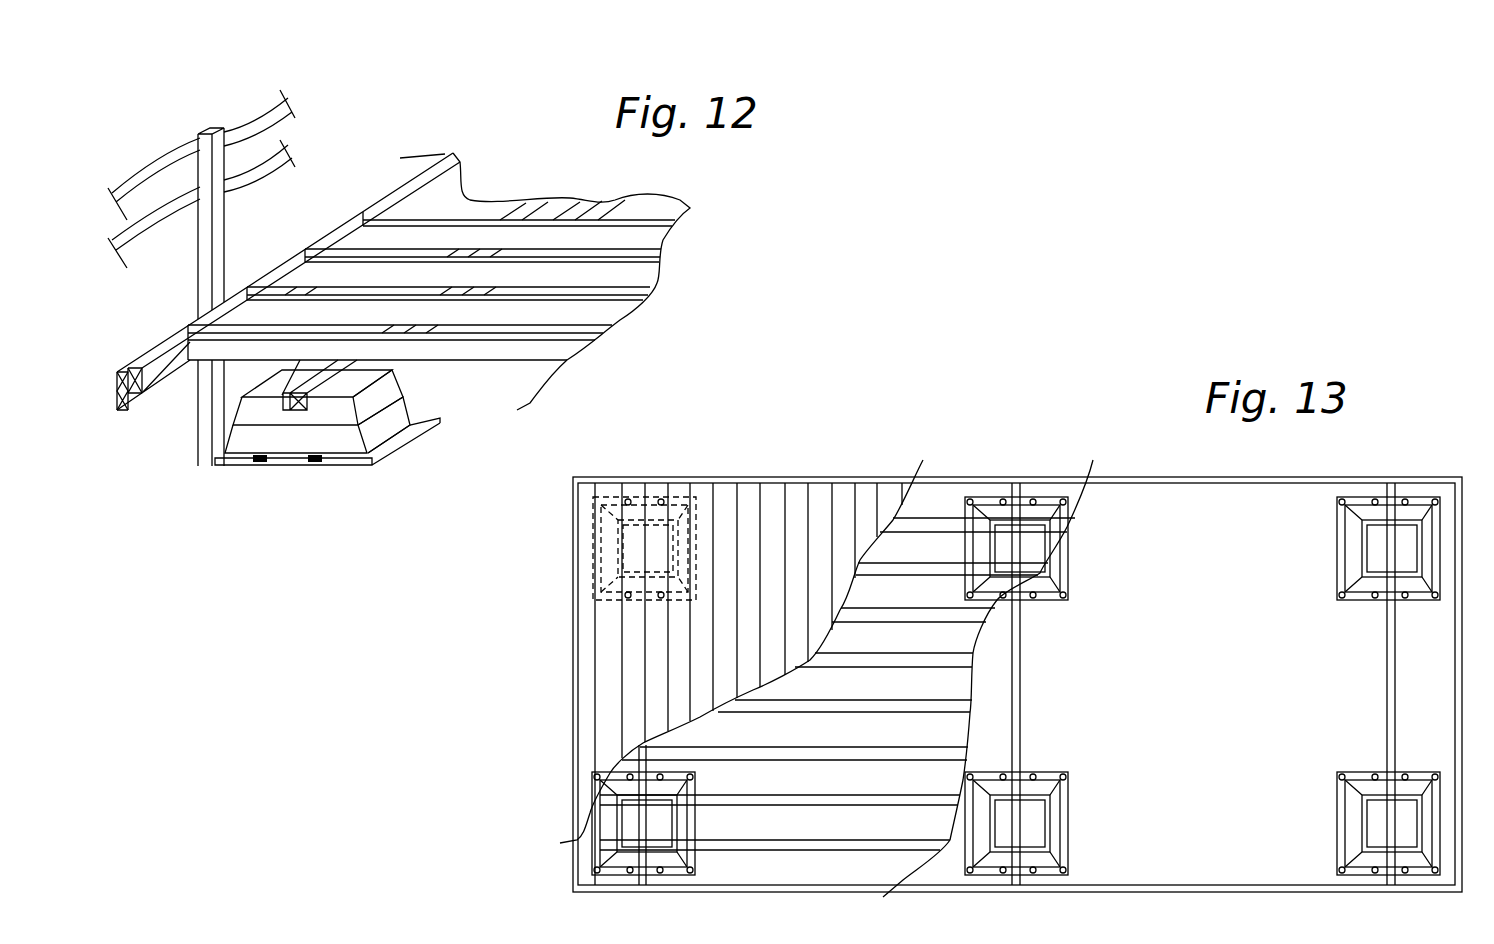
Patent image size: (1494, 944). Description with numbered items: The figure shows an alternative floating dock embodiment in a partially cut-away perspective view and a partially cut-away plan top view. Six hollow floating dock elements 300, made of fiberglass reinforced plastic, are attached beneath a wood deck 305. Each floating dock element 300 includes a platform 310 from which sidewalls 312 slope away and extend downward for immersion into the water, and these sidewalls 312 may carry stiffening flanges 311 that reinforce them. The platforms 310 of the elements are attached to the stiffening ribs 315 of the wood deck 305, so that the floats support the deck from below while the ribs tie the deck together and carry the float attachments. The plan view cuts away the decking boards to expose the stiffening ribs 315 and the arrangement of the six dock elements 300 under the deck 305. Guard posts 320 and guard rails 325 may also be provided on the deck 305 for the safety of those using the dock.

In FIG. 12, the floating dock element 300 is at (364, 424).
In FIG. 13, the floating dock element 300 is at (1070, 548).
In FIG. 12, the wood deck 305 is at (117, 412).
In FIG. 13, the platform 310 is at (1377, 547).
In FIG. 13, the stiffening flange 311 is at (1070, 574).
In FIG. 12, the sidewall 312 is at (308, 453).
In FIG. 12, the stiffening rib 315 is at (656, 198).
In FIG. 13, the stiffening rib 315 is at (1020, 732).
In FIG. 12, the guard post 320 is at (157, 124).
In FIG. 12, the guard rail 325 is at (295, 100).